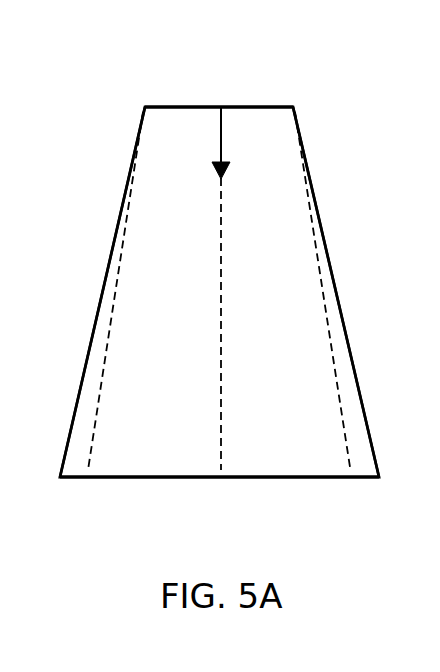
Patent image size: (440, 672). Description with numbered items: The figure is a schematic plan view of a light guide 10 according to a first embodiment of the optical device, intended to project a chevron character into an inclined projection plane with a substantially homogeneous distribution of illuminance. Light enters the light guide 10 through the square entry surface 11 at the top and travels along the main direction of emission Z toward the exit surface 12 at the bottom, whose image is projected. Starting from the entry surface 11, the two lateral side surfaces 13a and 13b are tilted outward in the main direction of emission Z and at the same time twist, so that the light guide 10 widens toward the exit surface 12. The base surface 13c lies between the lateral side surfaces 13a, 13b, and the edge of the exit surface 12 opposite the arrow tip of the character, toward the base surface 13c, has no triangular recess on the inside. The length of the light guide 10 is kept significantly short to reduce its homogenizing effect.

The light guide 10 is at (305, 162).
The entry surface 11 is at (185, 107).
The exit surface 12 is at (256, 478).
The lateral side surface 13a is at (100, 297).
The lateral side surface 13b is at (327, 257).
The base surface 13c is at (253, 152).
The main direction of emission Z is at (219, 133).